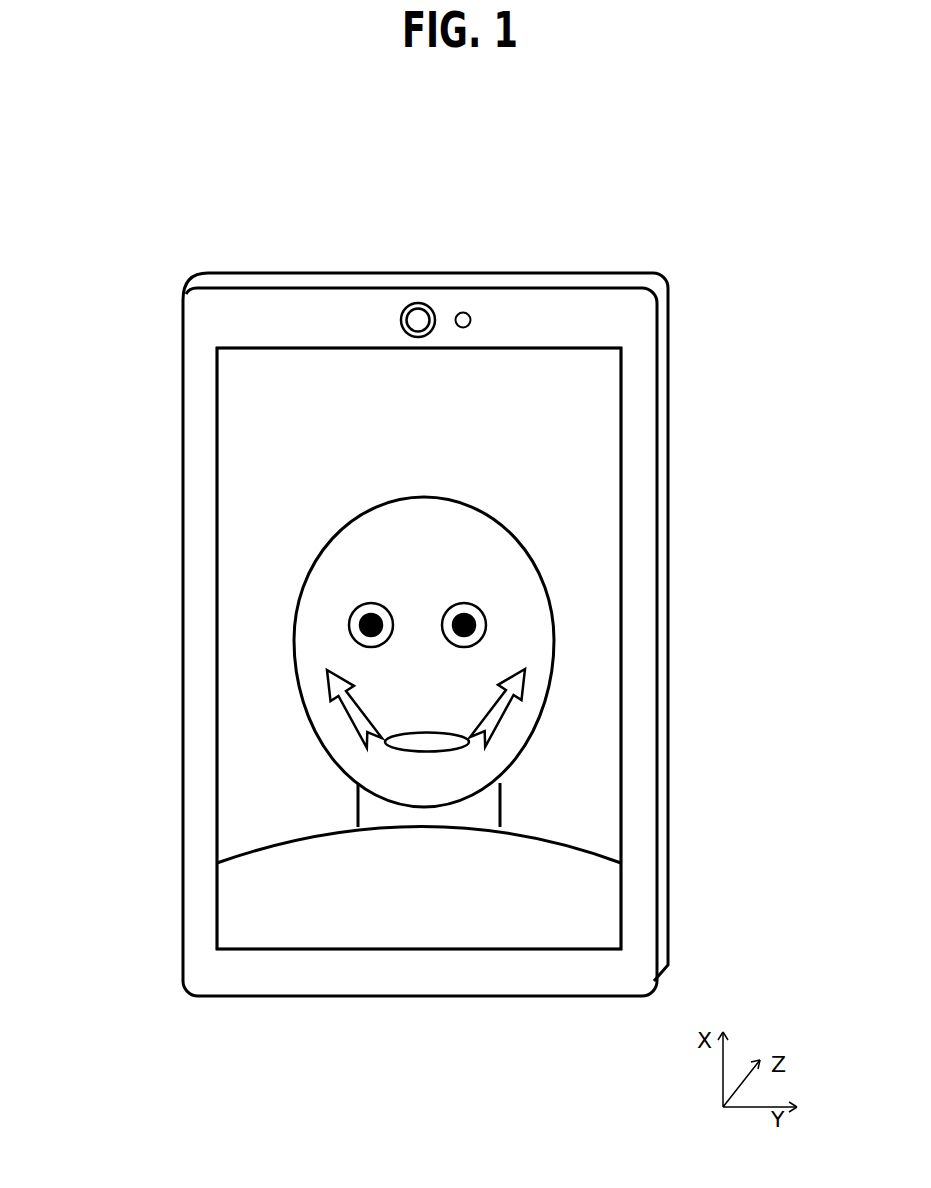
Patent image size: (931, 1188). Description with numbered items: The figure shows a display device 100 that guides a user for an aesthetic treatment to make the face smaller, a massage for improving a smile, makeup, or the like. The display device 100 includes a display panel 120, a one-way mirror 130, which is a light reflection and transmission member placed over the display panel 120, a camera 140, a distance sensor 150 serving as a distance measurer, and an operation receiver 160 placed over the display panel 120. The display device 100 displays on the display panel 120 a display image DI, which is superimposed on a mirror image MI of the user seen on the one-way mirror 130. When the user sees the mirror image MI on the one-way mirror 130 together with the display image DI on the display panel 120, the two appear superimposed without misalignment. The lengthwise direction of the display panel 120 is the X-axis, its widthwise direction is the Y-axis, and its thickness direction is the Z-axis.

The display device 100 is at (622, 253).
The display panel 120 is at (273, 488).
The one-way mirror 130 is at (265, 555).
The camera 140 is at (402, 310).
The distance sensor 150 is at (462, 311).
The operation receiver 160 is at (253, 648).
The mirror image MI is at (555, 632).
The display image DI is at (523, 686).